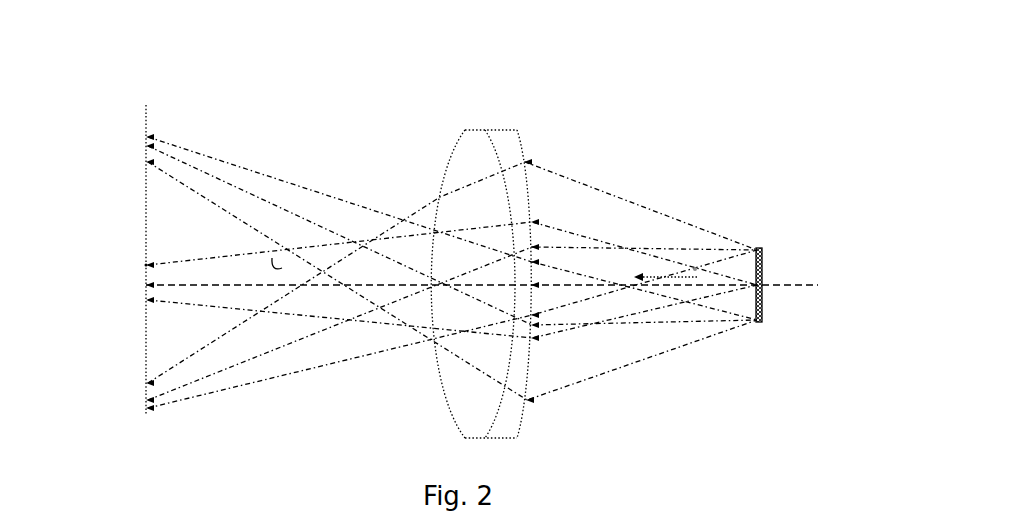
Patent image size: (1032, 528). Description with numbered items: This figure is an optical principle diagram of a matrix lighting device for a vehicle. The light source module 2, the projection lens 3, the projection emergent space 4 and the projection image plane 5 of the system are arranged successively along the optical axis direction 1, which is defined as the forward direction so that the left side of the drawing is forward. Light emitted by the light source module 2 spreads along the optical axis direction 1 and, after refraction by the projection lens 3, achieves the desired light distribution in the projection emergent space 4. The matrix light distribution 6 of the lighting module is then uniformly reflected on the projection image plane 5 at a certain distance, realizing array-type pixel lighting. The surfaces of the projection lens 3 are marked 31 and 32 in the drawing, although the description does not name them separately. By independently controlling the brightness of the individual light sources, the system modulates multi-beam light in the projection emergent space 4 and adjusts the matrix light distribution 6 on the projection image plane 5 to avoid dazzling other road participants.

The optical axis direction 1 is at (660, 272).
The light source module 2 is at (760, 248).
The projection lens 3 is at (485, 233).
The first lens surface 31 is at (519, 261).
The second lens surface 32 is at (470, 130).
The projection emergent space 4 is at (272, 258).
The projection image plane 5 is at (147, 130).
The matrix light distribution 6 is at (146, 263).